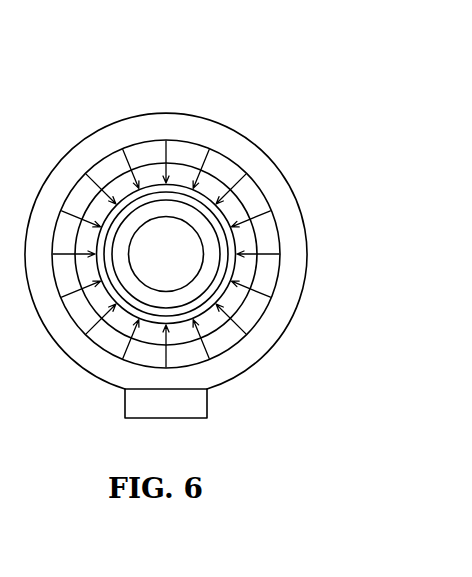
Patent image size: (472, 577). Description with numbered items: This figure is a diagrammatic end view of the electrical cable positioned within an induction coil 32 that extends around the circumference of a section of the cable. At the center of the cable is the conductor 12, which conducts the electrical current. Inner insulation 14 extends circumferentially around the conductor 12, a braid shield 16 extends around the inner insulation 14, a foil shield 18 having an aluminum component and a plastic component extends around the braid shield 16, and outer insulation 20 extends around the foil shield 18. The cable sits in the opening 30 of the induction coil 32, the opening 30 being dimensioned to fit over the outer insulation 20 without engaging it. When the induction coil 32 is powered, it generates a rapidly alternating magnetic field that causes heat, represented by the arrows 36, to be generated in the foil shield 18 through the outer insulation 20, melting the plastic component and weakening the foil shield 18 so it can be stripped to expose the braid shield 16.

The conductor 12 is at (146, 237).
The inner insulation 14 is at (195, 290).
The braid shield 16 is at (218, 282).
The foil shield 18 is at (233, 262).
The outer insulation 20 is at (247, 193).
The opening 30 is at (238, 162).
The induction coil 32 is at (233, 128).
The heat generated in the foil shield 36 is at (250, 227).